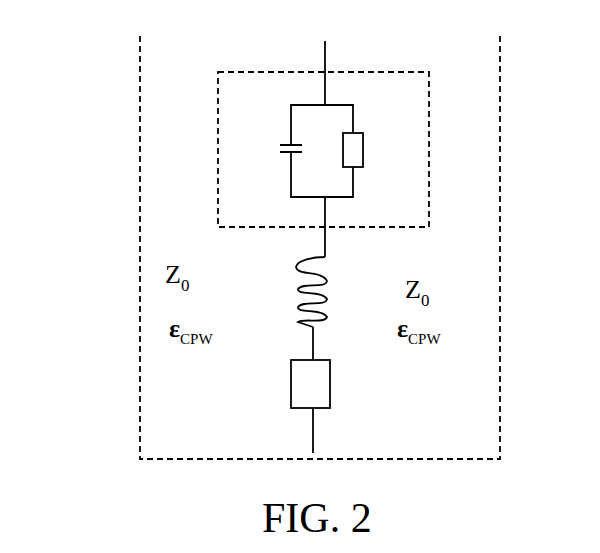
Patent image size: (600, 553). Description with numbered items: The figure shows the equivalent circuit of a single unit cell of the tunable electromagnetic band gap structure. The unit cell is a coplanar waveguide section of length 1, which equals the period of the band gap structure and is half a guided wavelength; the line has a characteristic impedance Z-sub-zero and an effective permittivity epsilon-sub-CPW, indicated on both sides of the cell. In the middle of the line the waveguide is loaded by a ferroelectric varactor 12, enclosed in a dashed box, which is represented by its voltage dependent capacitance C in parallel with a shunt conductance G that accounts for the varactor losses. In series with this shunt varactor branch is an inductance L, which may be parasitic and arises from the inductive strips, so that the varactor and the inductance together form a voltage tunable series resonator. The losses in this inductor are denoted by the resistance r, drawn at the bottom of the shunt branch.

The length of the CPW unit cell 1 is at (500, 34).
The ferroelectric varactor 12 is at (218, 180).
The voltage dependent capacitance C(V) C is at (264, 149).
The shunt conductance G(V) G is at (382, 150).
The inductance L is at (326, 292).
The inductor loss resistance r is at (322, 384).